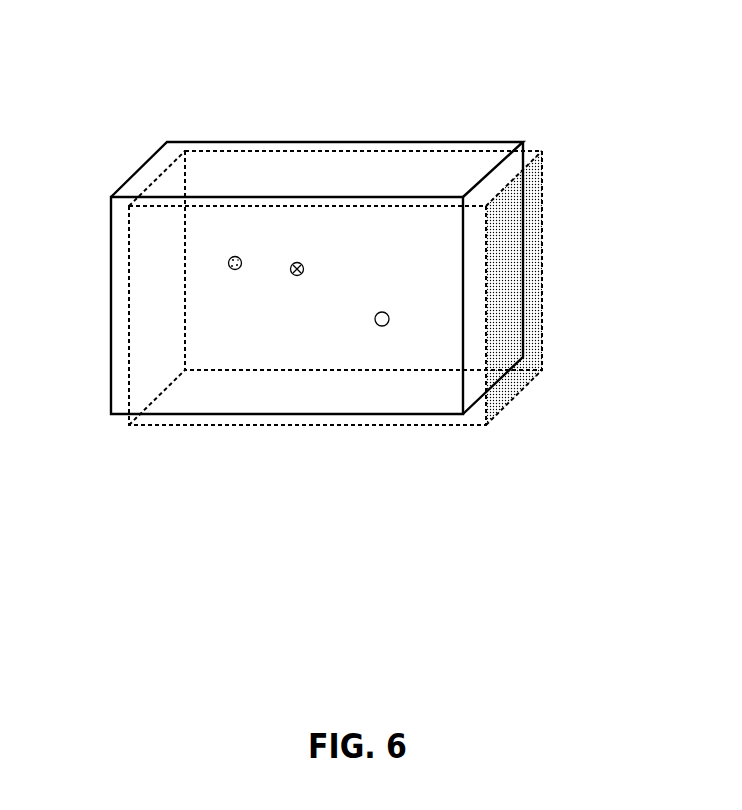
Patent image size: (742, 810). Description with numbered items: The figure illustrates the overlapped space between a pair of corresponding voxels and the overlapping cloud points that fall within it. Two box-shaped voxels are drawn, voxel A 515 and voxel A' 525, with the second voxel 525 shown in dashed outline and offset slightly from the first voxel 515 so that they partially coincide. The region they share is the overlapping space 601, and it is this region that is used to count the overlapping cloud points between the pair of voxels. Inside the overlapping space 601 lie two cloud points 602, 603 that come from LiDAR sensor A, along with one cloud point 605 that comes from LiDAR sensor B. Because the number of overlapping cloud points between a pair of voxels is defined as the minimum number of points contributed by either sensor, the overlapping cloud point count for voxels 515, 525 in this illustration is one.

The voxel A 515 is at (137, 187).
The voxel A' 525 is at (505, 393).
The overlapping space 601 is at (329, 236).
The cloud point 602 is at (255, 302).
The cloud point 603 is at (316, 308).
The cloud point 605 is at (402, 358).